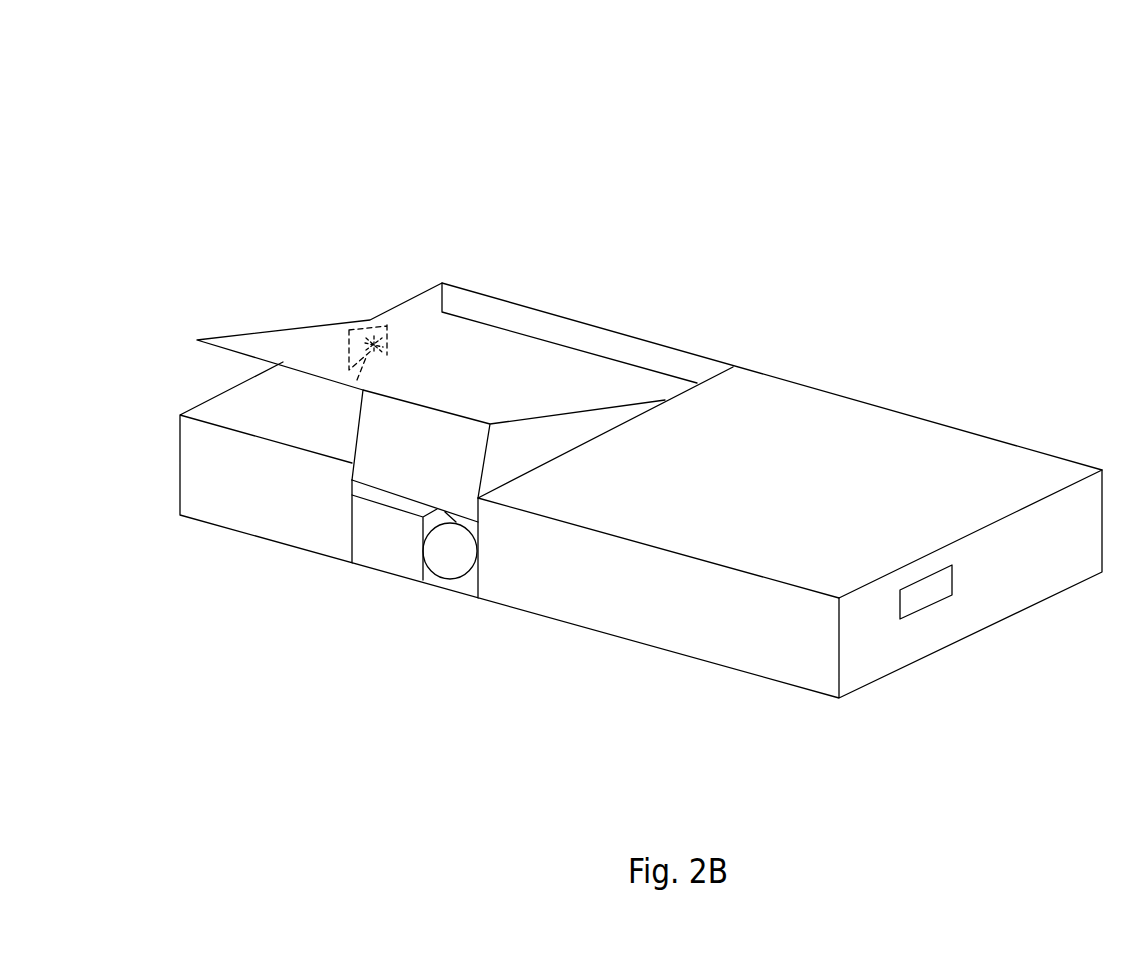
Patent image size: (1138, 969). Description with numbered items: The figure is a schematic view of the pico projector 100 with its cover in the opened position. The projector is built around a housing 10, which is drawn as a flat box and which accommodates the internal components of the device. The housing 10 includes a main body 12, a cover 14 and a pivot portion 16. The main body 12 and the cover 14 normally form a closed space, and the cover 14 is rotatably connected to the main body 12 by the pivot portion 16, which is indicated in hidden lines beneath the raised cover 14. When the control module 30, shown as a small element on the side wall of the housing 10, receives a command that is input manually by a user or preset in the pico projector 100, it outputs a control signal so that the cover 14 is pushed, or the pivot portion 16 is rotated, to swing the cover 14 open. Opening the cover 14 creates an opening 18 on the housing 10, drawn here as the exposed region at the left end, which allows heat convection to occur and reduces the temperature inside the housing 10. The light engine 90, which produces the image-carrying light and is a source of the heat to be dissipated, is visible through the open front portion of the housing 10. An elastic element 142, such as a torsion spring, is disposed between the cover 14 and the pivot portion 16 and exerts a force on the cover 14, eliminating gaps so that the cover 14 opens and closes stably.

The pico projector 100 is at (190, 49).
The housing 10 is at (853, 156).
The main body 12 is at (747, 395).
The cover 14 is at (553, 377).
The pivot portion 16 is at (390, 343).
The opening 18 is at (292, 403).
The elastic element 142 is at (350, 330).
The light engine 90 is at (393, 558).
The control module 30 is at (923, 590).